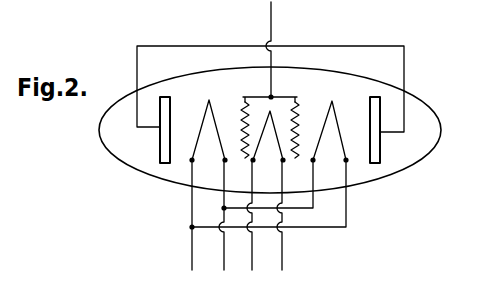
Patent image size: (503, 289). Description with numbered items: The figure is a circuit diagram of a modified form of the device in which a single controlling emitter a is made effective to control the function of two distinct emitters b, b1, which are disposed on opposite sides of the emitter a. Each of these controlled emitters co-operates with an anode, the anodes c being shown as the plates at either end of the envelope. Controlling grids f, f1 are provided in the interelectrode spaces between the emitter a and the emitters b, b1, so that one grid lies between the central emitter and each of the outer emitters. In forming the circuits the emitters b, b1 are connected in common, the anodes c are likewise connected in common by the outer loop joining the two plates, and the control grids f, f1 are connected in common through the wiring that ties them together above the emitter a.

The controlling emitter a is at (270, 111).
The emitter b is at (333, 101).
The emitter b1 is at (207, 107).
The anode c is at (162, 143).
The controlling grid f is at (296, 103).
The controlling grid f1 is at (244, 100).